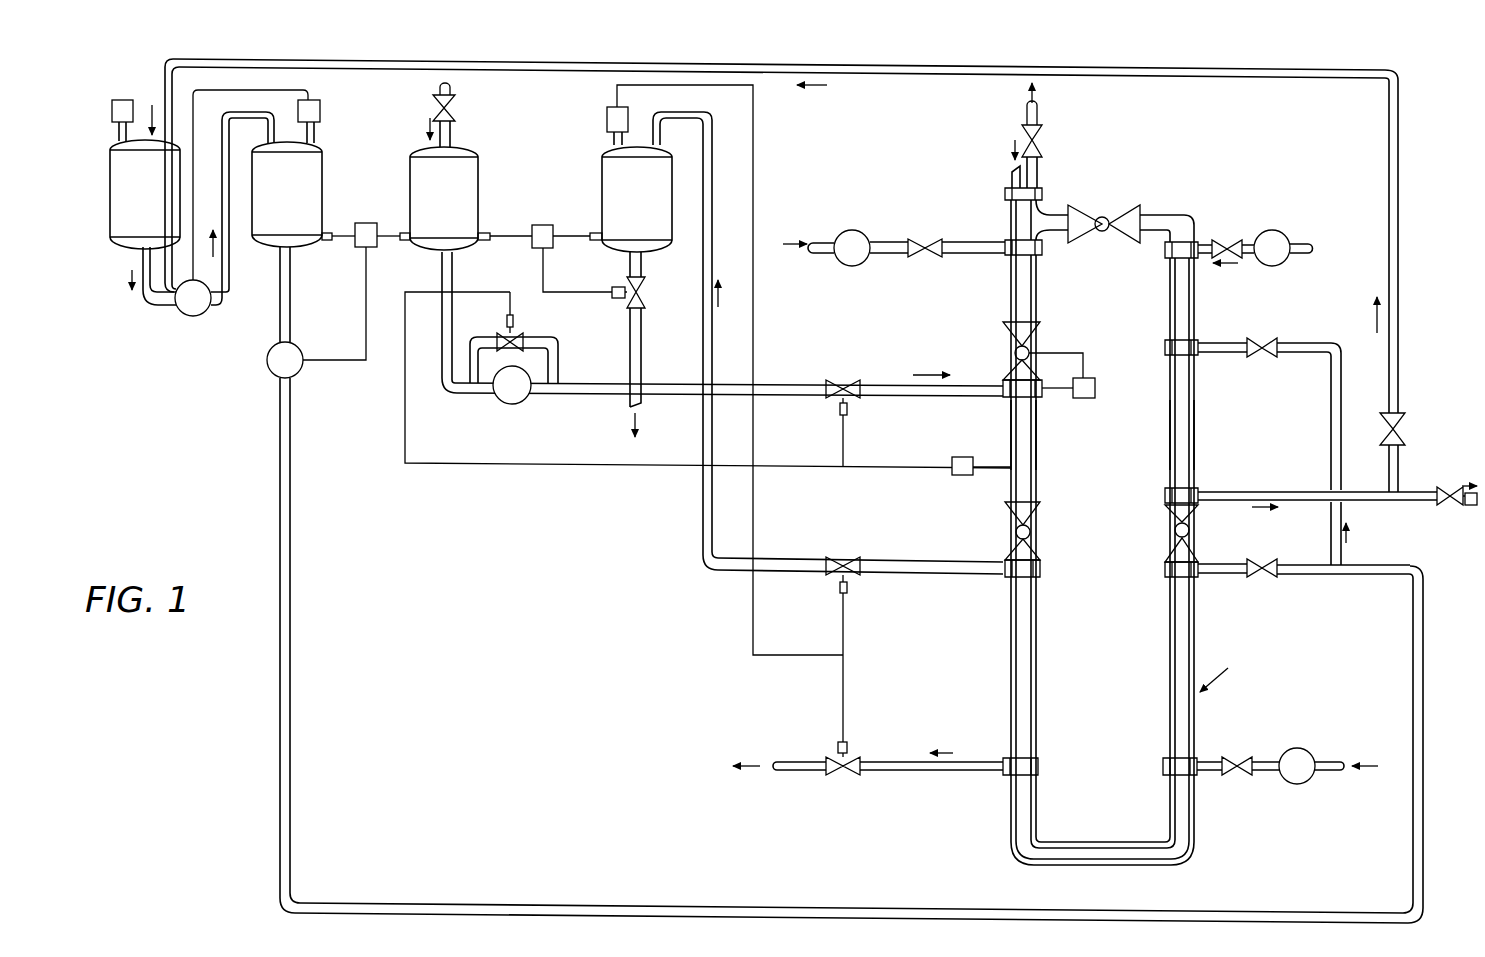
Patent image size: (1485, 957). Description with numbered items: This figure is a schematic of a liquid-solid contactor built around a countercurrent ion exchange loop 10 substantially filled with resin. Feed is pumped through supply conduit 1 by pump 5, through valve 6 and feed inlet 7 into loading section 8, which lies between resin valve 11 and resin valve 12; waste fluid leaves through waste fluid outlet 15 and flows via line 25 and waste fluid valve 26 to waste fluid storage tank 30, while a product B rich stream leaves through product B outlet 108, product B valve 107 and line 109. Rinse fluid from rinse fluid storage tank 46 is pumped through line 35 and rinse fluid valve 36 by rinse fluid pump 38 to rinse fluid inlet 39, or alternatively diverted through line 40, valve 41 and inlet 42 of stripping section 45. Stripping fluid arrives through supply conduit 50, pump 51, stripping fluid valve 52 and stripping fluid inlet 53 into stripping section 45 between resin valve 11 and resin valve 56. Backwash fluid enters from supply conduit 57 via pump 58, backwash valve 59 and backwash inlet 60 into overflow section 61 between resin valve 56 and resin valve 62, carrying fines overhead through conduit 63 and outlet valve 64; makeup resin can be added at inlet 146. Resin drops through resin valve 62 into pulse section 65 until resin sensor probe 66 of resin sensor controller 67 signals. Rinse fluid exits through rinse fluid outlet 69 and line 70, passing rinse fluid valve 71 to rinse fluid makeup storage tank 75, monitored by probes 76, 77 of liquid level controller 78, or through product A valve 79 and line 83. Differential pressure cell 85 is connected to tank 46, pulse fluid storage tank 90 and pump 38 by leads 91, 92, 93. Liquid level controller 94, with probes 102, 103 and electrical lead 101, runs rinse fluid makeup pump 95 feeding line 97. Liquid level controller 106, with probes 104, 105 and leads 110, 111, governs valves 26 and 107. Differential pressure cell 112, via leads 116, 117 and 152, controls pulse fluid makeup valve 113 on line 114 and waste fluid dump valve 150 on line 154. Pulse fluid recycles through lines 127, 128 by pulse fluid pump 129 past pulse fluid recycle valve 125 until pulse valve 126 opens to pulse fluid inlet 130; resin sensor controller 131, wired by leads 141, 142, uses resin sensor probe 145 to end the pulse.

The supply conduit 1 is at (1340, 761).
The pump 5 is at (1297, 748).
The valve 6 is at (1238, 757).
The feed inlet 7 is at (1163, 768).
The loading section 8 is at (1037, 656).
The countercurrent ion exchange loop 10 is at (1217, 667).
The resin valve 11 is at (1168, 528).
The resin valve 12 is at (1038, 551).
The waste fluid outlet 15 is at (1042, 571).
The line 25 is at (713, 232).
The waste fluid valve 26 is at (846, 557).
The waste fluid storage tank 30 is at (602, 186).
The line 35 is at (291, 291).
The rinse fluid valve 36 is at (1265, 560).
The rinse fluid pump 38 is at (266, 364).
The rinse fluid inlet 39 is at (1165, 571).
The line 40 is at (1331, 406).
The valve 41 is at (1265, 339).
The inlet 42 is at (1165, 346).
The stripping section 45 is at (1195, 433).
The rinse fluid storage tank 46 is at (322, 182).
The supply conduit 50 is at (1286, 234).
The pump 51 is at (1276, 268).
The stripping fluid valve 52 is at (1228, 240).
The stripping fluid inlet 53 is at (1165, 256).
The resin valve 56 is at (1120, 208).
The supply conduit 57 is at (826, 243).
The pump 58 is at (858, 230).
The backwash valve 59 is at (928, 240).
The backwash inlet 60 is at (1043, 251).
The overflow section 61 is at (1056, 213).
The resin valve 62 is at (1003, 336).
The conduit 63 is at (1038, 169).
The outlet valve 64 is at (1044, 141).
The pulse section 65 is at (1040, 463).
The resin sensor probe 66 is at (1053, 391).
The resin sensor controller 67 is at (1095, 381).
The rinse fluid outlet 69 is at (1165, 496).
The line 70 is at (380, 72).
The rinse fluid valve 71 is at (1380, 431).
The rinse fluid makeup storage tank 75 is at (112, 244).
The probe 76 is at (118, 131).
The probe 77 is at (152, 105).
The liquid level controller 78 is at (114, 100).
The product A valve 79 is at (1465, 506).
The line 83 is at (1440, 504).
The differential pressure cell 85 is at (366, 222).
The pulse fluid storage tank 90 is at (479, 169).
The lead 91 is at (344, 233).
The lead 92 is at (384, 241).
The lead 93 is at (365, 325).
The liquid level controller 94 is at (321, 109).
The rinse fluid makeup pump 95 is at (187, 318).
The line 97 is at (147, 303).
The electrical lead 101 is at (208, 90).
The probe 102 is at (283, 112).
The probe 103 is at (315, 134).
The probe 104 is at (613, 139).
The probe 105 is at (656, 113).
The liquid level controller 106 is at (607, 115).
The product B valve 107 is at (840, 776).
The product B outlet 108 is at (1040, 768).
The line 109 is at (920, 772).
The lead 110 is at (810, 655).
The lead 111 is at (848, 648).
The differential pressure cell 112 is at (553, 226).
The pulse fluid makeup valve 113 is at (455, 103).
The line 114 is at (418, 121).
The lead 116 is at (512, 233).
The lead 117 is at (556, 249).
The pulse fluid recycle valve 125 is at (520, 334).
The pulse valve 126 is at (845, 380).
The line 127 is at (453, 276).
The line 128 is at (559, 361).
The pulse fluid pump 129 is at (512, 404).
The pulse fluid inlet 130 is at (1003, 393).
The resin sensor controller 131 is at (958, 457).
The lead 141 is at (405, 434).
The lead 142 is at (843, 440).
The resin sensor probe 145 is at (990, 471).
The inlet 146 is at (1010, 180).
The waste fluid dump valve 150 is at (646, 292).
The lead 152 is at (577, 294).
The line 154 is at (642, 266).